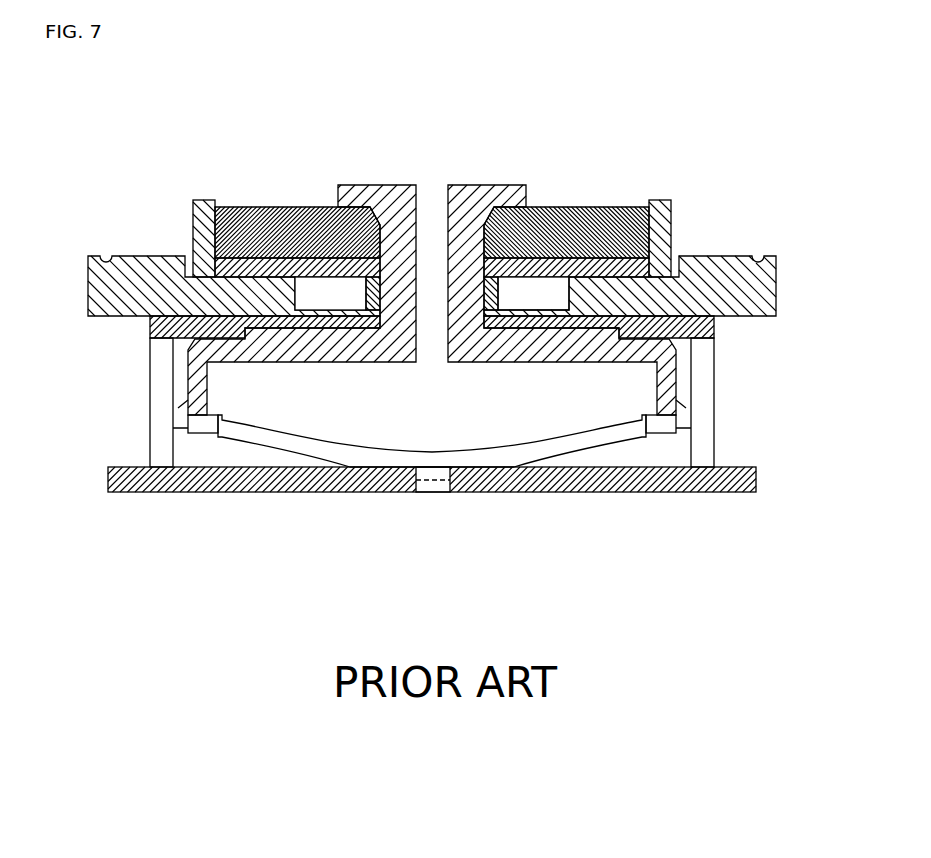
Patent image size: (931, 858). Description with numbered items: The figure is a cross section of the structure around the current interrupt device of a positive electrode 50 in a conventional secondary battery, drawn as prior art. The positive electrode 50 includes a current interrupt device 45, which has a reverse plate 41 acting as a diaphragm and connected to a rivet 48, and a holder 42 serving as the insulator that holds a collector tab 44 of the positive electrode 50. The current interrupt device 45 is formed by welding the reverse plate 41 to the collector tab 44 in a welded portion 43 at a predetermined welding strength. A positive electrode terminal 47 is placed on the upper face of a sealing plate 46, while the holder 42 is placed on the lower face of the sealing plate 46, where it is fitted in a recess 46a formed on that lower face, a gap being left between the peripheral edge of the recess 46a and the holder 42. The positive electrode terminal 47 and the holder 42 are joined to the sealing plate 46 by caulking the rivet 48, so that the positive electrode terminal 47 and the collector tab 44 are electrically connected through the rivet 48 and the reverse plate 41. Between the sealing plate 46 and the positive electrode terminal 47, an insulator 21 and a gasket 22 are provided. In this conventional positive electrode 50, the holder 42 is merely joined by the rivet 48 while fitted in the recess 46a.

The insulator 21 is at (193, 232).
The gasket 22 is at (340, 306).
The reverse plate 41 is at (588, 452).
The holder 42 is at (730, 431).
The welded portion 43 is at (432, 458).
The collector tab 44 is at (483, 492).
The current interrupt device 45 is at (124, 389).
The sealing plate 46 is at (716, 232).
The recess 46a is at (718, 318).
The positive electrode terminal 47 is at (580, 207).
The rivet 48 is at (473, 171).
The positive electrode 50 is at (203, 129).